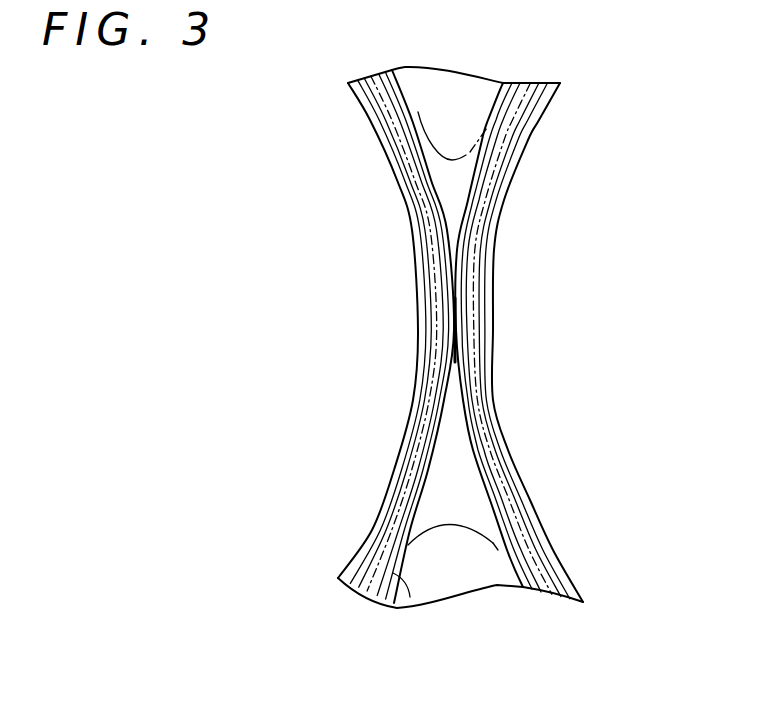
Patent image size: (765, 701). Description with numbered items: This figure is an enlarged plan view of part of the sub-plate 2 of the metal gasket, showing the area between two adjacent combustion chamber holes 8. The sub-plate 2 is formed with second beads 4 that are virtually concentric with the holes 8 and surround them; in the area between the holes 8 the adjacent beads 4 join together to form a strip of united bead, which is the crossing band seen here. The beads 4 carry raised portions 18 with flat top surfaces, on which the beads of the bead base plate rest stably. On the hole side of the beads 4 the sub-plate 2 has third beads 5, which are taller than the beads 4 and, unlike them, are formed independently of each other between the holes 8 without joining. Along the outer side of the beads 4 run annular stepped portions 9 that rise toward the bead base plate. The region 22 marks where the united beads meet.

The sub-plate 2 is at (541, 131).
The second beads 4 is at (431, 197).
The third beads 5 is at (432, 363).
The second holes 8 is at (418, 282).
The annular stepped portions 9 is at (418, 111).
The raised portions 18 is at (478, 182).
The junction portion 22 is at (453, 327).